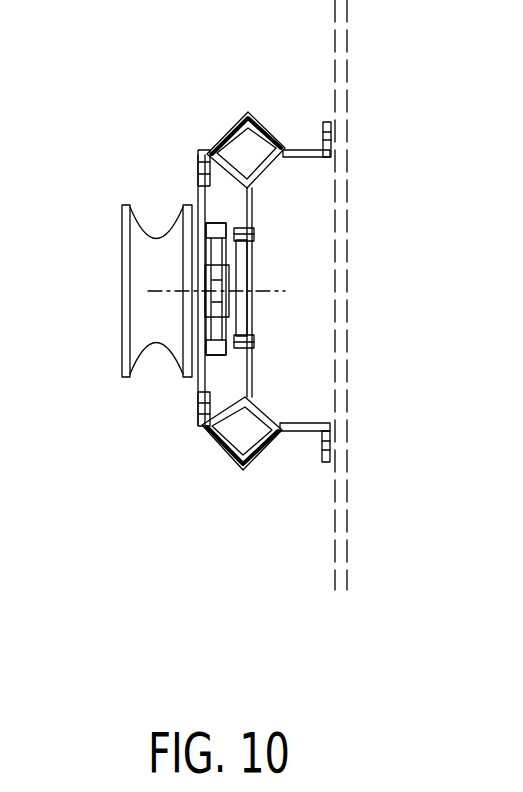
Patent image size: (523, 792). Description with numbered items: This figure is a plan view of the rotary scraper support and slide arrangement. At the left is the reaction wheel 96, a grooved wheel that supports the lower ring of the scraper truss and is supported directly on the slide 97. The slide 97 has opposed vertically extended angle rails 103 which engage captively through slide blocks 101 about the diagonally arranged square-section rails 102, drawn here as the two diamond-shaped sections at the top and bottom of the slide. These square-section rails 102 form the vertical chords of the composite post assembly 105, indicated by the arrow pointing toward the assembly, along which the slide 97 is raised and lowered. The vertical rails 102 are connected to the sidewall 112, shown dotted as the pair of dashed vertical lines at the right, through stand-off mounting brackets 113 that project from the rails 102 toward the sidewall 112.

The reaction wheel 96 is at (147, 303).
The slide 97 is at (200, 383).
The slide blocks 101 is at (228, 135).
The square-section rails 102 is at (270, 160).
The angle rails 103 is at (255, 112).
The composite post assembly 105 is at (287, 336).
The sidewall 112 is at (333, 583).
The stand-off mounting brackets 113 is at (306, 157).